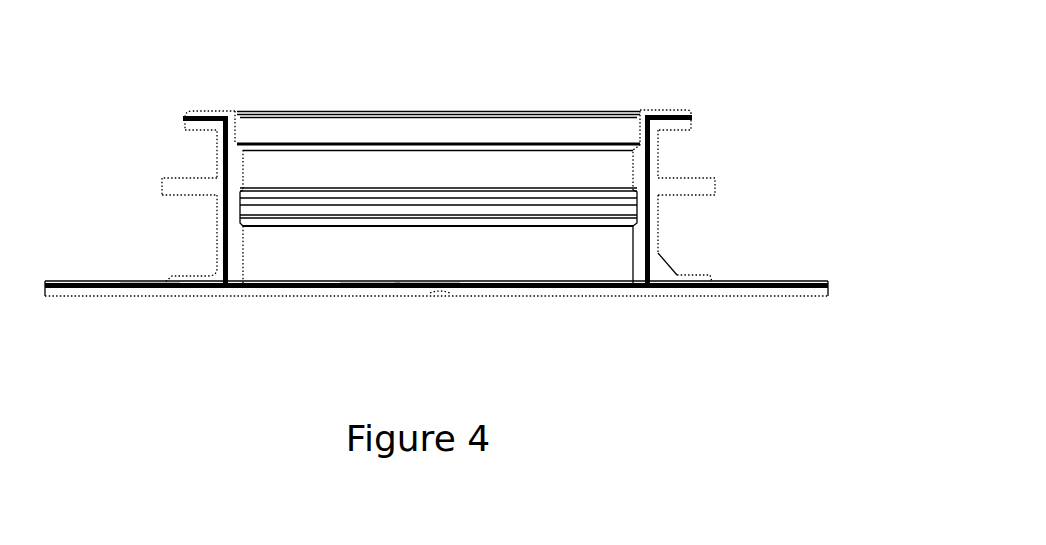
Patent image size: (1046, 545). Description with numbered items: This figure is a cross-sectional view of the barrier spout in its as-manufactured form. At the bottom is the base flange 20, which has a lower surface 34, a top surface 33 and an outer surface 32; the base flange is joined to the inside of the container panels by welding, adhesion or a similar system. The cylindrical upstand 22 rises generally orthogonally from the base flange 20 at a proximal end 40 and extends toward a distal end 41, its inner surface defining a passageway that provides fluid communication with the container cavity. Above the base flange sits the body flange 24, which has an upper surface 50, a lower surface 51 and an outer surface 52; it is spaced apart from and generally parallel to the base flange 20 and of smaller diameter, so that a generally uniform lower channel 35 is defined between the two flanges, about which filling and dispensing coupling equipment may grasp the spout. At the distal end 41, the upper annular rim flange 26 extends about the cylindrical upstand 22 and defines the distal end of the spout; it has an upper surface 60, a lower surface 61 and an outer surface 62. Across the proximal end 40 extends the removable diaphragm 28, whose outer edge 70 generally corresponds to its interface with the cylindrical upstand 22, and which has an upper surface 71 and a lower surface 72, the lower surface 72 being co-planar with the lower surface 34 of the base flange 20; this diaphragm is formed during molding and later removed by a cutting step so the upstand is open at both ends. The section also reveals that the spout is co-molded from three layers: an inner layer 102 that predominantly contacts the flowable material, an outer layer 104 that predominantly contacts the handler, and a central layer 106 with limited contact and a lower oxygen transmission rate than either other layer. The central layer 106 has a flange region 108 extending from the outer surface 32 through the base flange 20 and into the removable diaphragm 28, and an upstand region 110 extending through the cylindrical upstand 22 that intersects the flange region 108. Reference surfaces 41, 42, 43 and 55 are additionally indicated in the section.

The base flange 20 is at (470, 200).
The cylindrical upstand 22 is at (631, 165).
The body flange 24 is at (715, 183).
The upper annular rim flange 26 is at (693, 119).
The removable diaphragm 28 is at (470, 308).
The outer surface 32 is at (830, 290).
The top surface 33 is at (747, 277).
The lower surface 34 is at (792, 298).
The lower channel 35 is at (215, 240).
The proximal end 40 is at (628, 288).
The distal end 41 is at (637, 150).
The right clip wall 42 is at (662, 168).
The cable side edge 43 is at (628, 243).
The upper surface 50 is at (187, 173).
The lower surface 51 is at (188, 200).
The outer surface 52 is at (160, 188).
The right clip upper portion 55 is at (662, 152).
The upper surface 60 is at (218, 109).
The lower surface 61 is at (197, 130).
The outer surface 62 is at (184, 128).
The outer edge 70 is at (243, 290).
The upper surface 71 is at (373, 283).
The lower surface 72 is at (400, 308).
The inner layer 102 is at (245, 170).
The outer layer 104 is at (692, 197).
The central layer 106 is at (228, 257).
The flange region 108 is at (152, 288).
The upstand region 110 is at (231, 144).